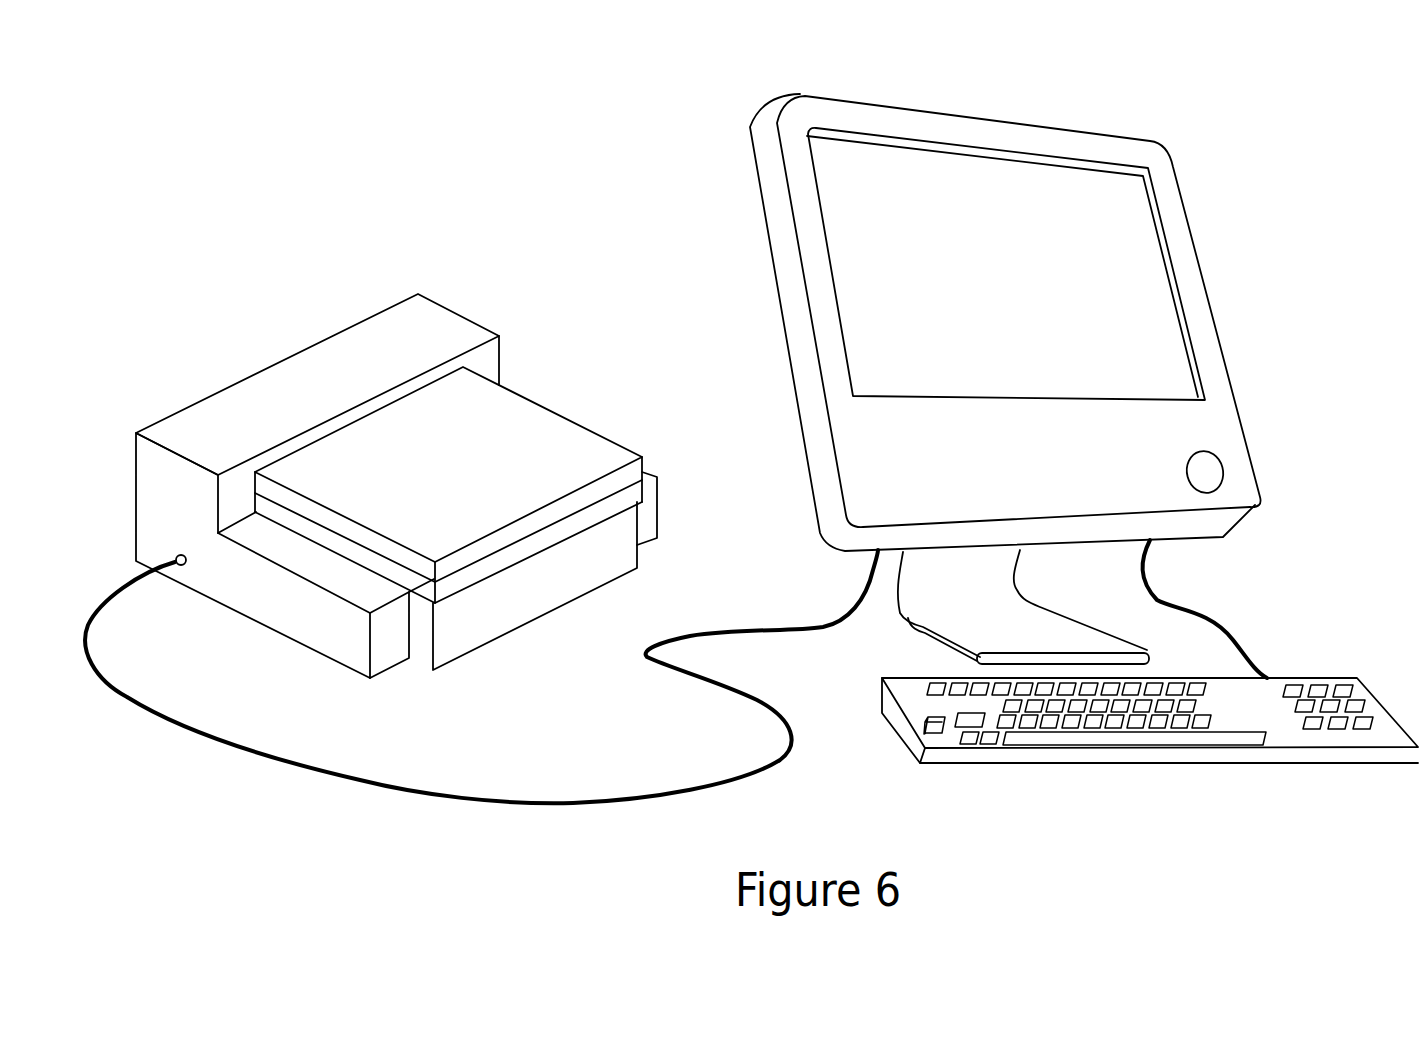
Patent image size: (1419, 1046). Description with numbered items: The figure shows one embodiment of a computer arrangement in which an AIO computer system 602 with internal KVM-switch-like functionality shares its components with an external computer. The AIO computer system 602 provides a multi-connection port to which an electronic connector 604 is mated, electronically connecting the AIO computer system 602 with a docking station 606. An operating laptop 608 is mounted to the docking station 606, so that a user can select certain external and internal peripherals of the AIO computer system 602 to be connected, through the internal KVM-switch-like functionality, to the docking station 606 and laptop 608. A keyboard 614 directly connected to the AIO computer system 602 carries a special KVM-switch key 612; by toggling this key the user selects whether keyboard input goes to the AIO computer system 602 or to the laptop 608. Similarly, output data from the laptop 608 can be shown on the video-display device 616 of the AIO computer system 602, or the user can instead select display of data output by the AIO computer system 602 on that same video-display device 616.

The AIO computer system 602 is at (1051, 348).
The electronic connector 604 is at (360, 783).
The docking station 606 is at (460, 302).
The laptop 608 is at (540, 435).
The KVM-switch key 612 is at (927, 722).
The keyboard 614 is at (1122, 675).
The video-display device 616 is at (988, 180).